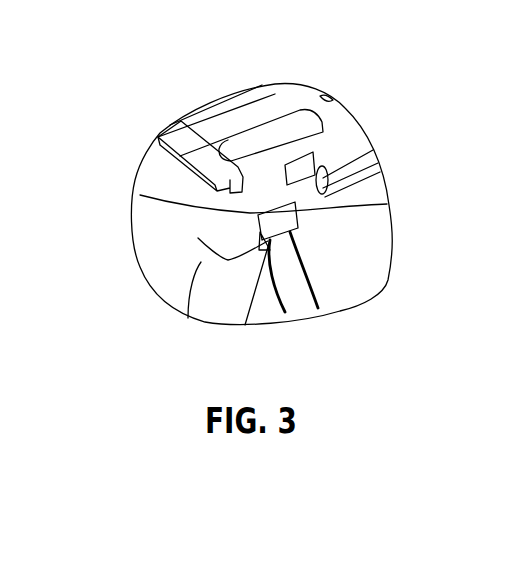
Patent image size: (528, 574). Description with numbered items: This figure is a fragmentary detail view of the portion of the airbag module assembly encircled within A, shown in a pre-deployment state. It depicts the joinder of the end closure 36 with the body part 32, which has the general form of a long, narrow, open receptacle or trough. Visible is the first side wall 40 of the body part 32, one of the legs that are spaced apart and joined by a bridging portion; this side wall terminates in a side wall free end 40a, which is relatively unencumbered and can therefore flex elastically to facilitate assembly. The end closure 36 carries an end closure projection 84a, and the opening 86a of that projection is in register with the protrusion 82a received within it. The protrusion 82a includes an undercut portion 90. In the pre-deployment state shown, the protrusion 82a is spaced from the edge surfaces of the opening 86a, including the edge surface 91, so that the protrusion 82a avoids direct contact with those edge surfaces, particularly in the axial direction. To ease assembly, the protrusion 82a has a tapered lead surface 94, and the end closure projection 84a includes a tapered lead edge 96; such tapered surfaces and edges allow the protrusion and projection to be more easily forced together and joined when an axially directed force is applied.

The encircled portion A is at (238, 92).
The body part 32 is at (335, 280).
The end closure 36 is at (188, 318).
The first side wall 40 is at (316, 237).
The side wall free end 40a is at (347, 153).
The protrusion 82a is at (318, 308).
The end closure projection 84a is at (270, 196).
The opening 86a is at (272, 198).
The undercut portion 90 is at (140, 195).
The edge surface 91 is at (387, 204).
The tapered lead surface 94 is at (285, 312).
The tapered lead edge 96 is at (300, 222).